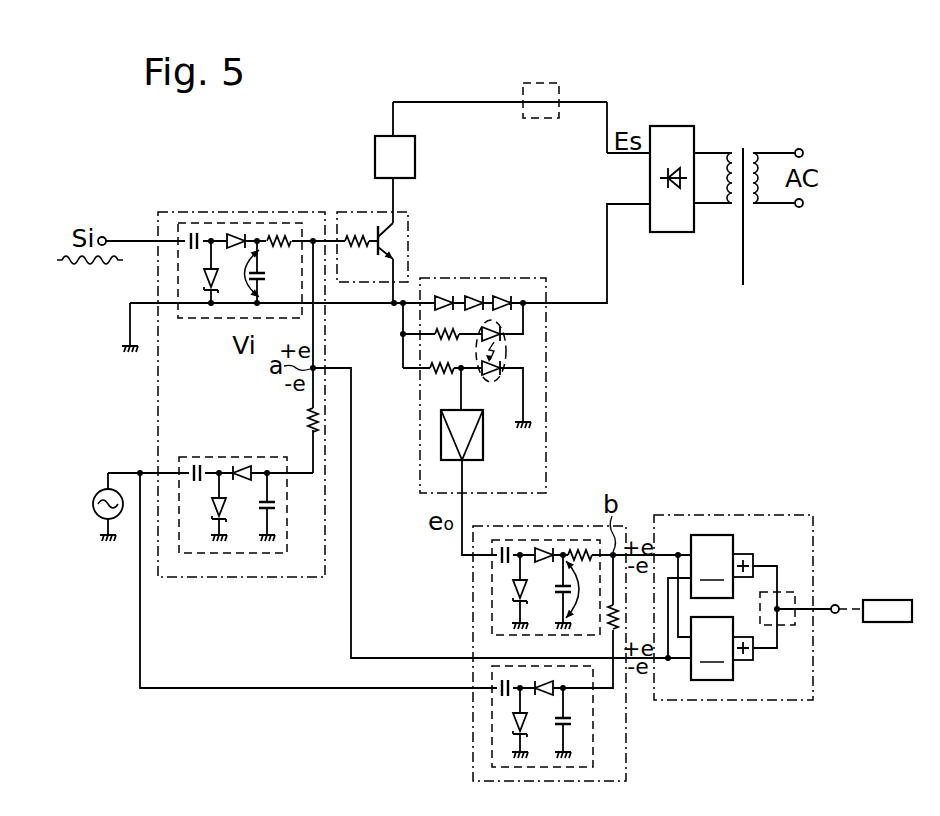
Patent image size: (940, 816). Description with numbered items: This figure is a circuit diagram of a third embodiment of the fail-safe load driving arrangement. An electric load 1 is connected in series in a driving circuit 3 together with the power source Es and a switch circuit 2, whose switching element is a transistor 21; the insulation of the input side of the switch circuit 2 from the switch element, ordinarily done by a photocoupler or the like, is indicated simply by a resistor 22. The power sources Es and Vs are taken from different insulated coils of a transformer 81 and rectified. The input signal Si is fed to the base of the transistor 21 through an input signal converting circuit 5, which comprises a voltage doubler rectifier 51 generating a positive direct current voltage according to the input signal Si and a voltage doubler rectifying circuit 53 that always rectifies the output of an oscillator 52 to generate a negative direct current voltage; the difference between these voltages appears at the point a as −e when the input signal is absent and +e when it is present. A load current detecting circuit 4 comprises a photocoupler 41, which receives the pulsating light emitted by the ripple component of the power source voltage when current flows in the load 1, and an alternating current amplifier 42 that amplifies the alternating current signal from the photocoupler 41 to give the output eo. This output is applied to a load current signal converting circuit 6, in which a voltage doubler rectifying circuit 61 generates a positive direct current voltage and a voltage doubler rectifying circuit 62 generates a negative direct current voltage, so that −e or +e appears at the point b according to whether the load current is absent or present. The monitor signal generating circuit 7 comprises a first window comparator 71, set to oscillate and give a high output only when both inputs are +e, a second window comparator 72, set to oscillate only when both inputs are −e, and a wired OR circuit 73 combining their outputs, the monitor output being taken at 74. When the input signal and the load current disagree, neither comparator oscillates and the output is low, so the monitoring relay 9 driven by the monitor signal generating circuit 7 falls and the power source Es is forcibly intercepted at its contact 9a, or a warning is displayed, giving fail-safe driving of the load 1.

The electric load 1 is at (416, 157).
The switch circuit 2 is at (393, 218).
The transistor 21 is at (396, 241).
The resistor 22 is at (358, 259).
The driving circuit 3 is at (478, 103).
The load current detecting circuit 4 is at (484, 366).
The photocoupler 41 is at (506, 347).
The alternating current amplifier 42 is at (483, 447).
The input signal converting circuit 5 is at (241, 360).
The voltage doubler rectifier 51 is at (208, 318).
The oscillator 52 is at (92, 505).
The voltage doubler rectifying circuit 53 is at (234, 457).
The load current signal converting circuit 6 is at (520, 653).
The voltage doubler rectifying circuit 61 is at (490, 617).
The voltage doubler rectifying circuit 62 is at (492, 736).
The monitor signal generating circuit 7 is at (742, 582).
The first window comparator 71 is at (722, 566).
The second window comparator 72 is at (722, 648).
The wired OR circuit 73 is at (783, 592).
The output terminal 74 is at (835, 604).
The transformer 81 is at (743, 147).
The monitoring relay 9 is at (891, 600).
The contact 9a is at (560, 83).